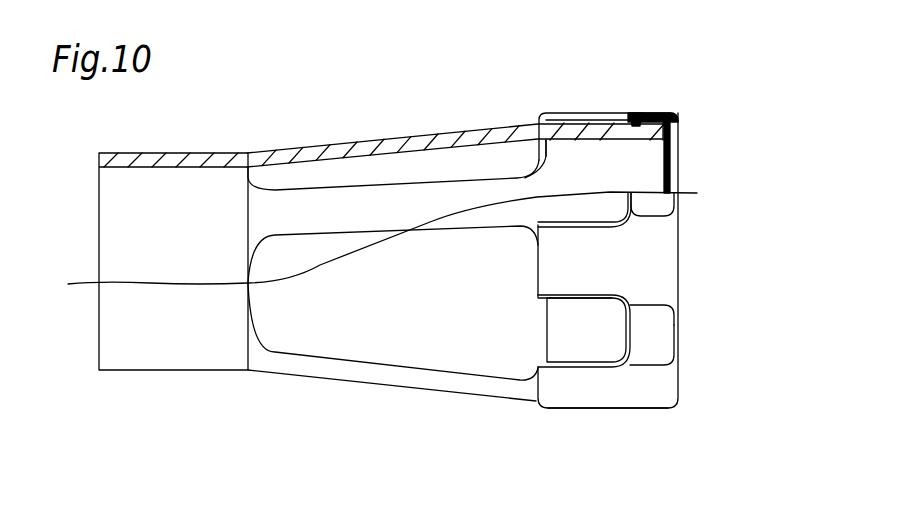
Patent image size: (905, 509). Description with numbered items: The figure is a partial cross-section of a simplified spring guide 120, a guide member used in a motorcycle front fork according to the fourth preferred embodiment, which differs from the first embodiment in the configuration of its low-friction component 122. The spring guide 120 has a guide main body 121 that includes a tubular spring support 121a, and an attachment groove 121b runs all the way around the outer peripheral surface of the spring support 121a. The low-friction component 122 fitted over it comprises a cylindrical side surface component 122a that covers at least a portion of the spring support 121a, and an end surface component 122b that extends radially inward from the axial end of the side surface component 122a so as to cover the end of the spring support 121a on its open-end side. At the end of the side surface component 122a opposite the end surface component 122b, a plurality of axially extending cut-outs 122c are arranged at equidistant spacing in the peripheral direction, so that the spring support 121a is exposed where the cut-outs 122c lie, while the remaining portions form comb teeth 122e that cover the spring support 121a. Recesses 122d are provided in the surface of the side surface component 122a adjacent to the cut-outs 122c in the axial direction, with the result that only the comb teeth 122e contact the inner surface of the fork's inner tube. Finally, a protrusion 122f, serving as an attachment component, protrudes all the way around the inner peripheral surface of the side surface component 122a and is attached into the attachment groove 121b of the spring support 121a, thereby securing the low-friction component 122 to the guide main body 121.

The spring guide 120 is at (688, 97).
The guide main body 121 is at (333, 136).
The spring support 121a is at (587, 350).
The attachment groove 121b is at (625, 114).
The low-friction component 122 is at (684, 270).
The side surface component 122a is at (620, 392).
The end surface component 122b is at (680, 127).
The cut-outs 122c is at (582, 302).
The recesses 122d is at (653, 345).
The comb teeth 122e is at (612, 255).
The protrusion 122f is at (637, 113).